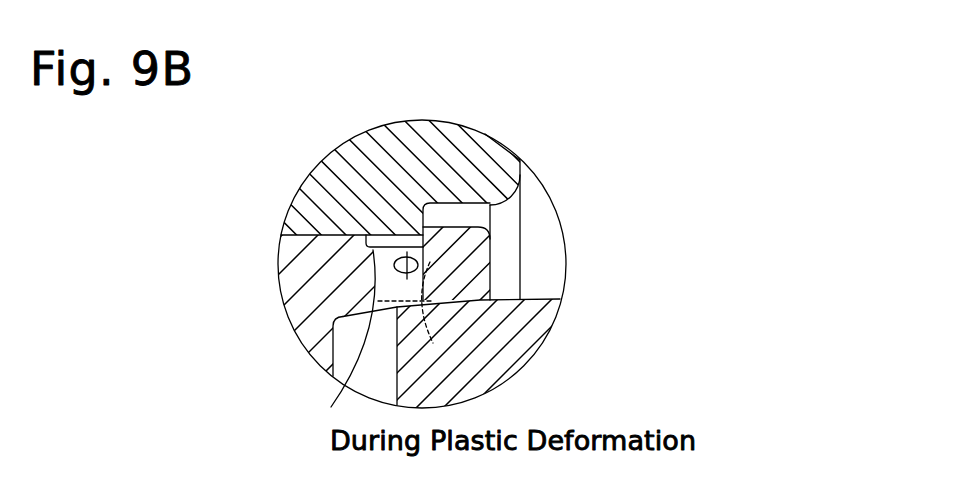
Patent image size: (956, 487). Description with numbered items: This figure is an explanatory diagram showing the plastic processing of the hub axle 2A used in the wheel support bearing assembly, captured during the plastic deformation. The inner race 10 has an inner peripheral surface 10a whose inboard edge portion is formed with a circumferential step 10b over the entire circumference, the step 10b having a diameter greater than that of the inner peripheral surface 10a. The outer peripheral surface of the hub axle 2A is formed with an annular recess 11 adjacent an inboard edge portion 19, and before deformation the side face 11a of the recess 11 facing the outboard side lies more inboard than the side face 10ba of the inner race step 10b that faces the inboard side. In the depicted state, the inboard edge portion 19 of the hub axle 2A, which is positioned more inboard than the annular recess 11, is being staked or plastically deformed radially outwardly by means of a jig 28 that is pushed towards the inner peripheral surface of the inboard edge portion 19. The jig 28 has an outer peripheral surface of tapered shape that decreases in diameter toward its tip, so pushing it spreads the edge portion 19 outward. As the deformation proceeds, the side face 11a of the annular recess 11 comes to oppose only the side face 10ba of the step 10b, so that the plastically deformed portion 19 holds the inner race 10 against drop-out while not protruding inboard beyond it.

The metal shell 10 is at (348, 178).
The inner peripheral surface 10a is at (300, 250).
The step 10b is at (498, 222).
The side face of the inner race step 10ba is at (445, 203).
The annular recess 11 is at (354, 342).
The side face of the recess 11a is at (420, 232).
The inboard edge portion 19 is at (468, 272).
The hub axle 2A is at (302, 292).
The jig 28 is at (490, 348).